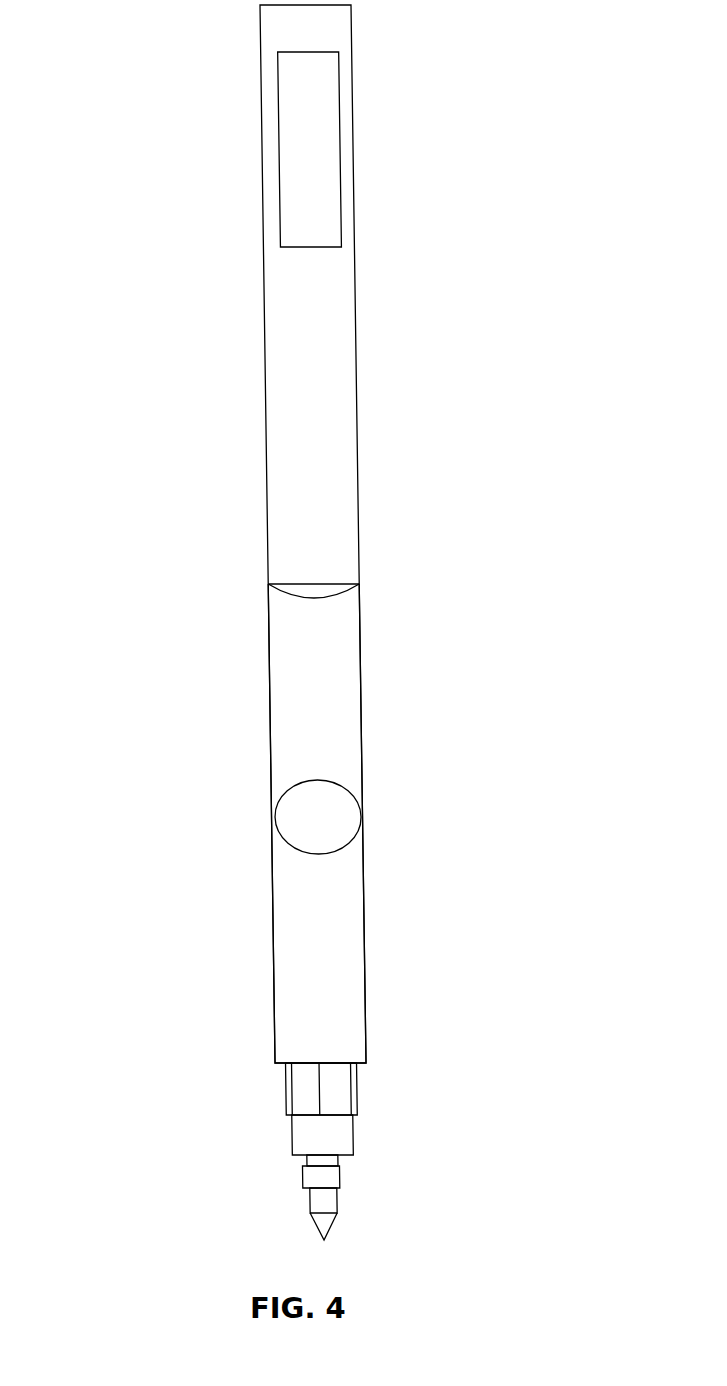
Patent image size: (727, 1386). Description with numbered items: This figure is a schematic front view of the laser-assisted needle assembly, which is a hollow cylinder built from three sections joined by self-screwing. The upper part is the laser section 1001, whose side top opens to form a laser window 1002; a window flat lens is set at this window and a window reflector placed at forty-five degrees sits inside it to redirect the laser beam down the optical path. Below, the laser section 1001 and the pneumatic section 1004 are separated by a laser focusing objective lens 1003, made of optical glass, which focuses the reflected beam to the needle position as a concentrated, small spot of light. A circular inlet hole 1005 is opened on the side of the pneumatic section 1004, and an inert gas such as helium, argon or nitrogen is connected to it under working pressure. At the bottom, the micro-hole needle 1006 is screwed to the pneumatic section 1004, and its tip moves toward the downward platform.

The laser section 1001 is at (313, 377).
The laser window 1002 is at (310, 218).
The laser focusing objective lens 1003 is at (313, 587).
The pneumatic section 1004 is at (315, 752).
The inlet hole 1005 is at (312, 832).
The micro-hole needle 1006 is at (317, 1133).